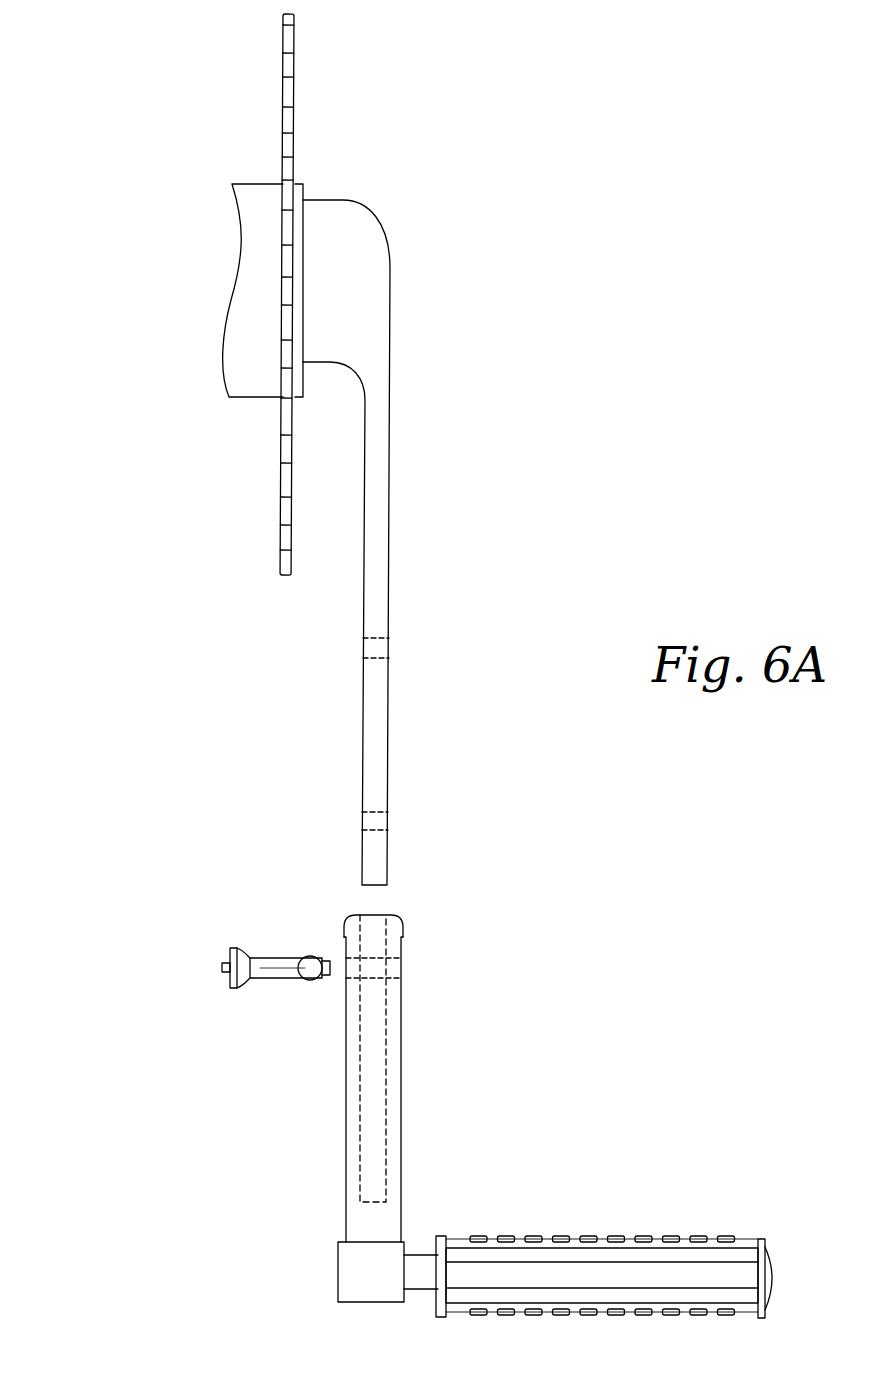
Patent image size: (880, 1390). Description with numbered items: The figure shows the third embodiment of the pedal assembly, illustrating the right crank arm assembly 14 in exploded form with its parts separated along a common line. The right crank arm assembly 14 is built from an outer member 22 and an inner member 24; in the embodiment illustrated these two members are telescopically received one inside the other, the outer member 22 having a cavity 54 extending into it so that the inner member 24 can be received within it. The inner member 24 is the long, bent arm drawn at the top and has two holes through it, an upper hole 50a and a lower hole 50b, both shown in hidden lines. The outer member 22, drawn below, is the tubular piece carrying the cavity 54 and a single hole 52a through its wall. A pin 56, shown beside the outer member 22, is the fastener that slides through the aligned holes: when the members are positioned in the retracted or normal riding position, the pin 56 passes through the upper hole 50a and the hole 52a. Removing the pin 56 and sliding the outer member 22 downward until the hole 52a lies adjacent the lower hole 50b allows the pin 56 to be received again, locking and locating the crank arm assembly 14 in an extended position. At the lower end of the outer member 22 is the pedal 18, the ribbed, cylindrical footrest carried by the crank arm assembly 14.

The right crank arm assembly 14 is at (593, 543).
The pedal 18 is at (620, 1235).
The outer member 22 is at (403, 1097).
The inner member 24 is at (390, 502).
The upper hole 50a is at (376, 636).
The lower hole 50b is at (376, 810).
The hole 52a is at (390, 958).
The cavity 54 is at (370, 1112).
The pin 56 is at (276, 956).